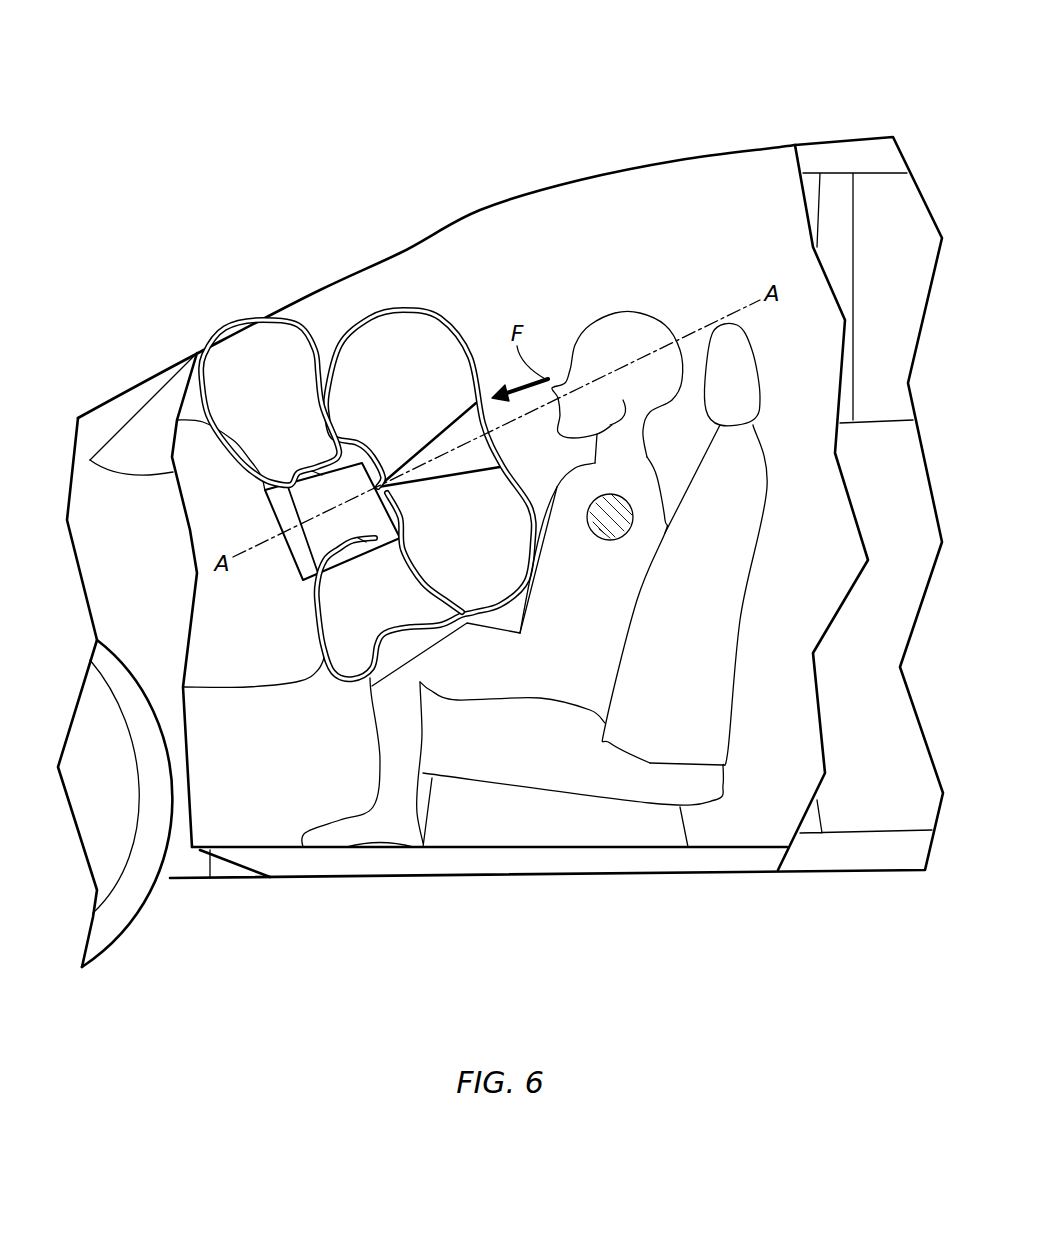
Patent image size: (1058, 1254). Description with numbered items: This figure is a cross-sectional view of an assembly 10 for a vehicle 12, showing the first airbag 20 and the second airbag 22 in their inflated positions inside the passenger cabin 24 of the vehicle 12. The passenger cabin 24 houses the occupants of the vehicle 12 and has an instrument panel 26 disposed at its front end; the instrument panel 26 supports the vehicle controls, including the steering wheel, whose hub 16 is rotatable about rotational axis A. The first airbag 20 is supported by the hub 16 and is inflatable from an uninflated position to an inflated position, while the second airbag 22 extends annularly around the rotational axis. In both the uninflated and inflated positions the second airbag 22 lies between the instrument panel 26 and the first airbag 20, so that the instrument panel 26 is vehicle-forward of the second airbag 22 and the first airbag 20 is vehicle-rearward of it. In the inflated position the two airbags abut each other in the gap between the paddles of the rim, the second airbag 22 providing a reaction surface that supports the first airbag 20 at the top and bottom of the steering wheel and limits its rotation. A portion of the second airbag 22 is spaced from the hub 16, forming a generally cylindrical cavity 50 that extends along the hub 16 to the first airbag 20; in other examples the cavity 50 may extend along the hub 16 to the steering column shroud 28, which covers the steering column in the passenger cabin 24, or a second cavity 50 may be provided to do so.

The assembly 10 is at (495, 267).
The vehicle 12 is at (782, 63).
The hub 16 is at (362, 513).
The first airbag 20 is at (403, 317).
The second airbag 22 is at (312, 333).
The passenger cabin 24 is at (663, 198).
The instrument panel 26 is at (237, 667).
The steering column shroud 28 is at (307, 560).
The cavity 50 is at (317, 473).